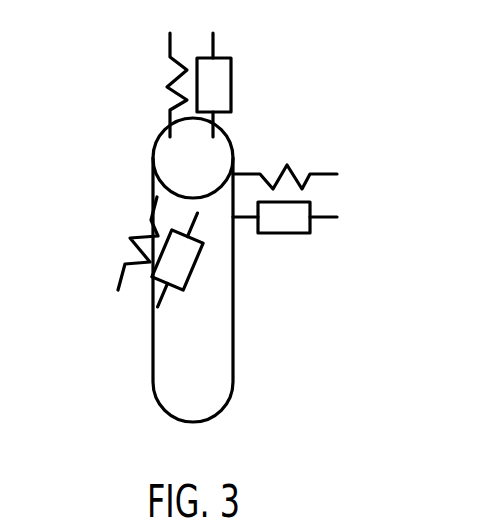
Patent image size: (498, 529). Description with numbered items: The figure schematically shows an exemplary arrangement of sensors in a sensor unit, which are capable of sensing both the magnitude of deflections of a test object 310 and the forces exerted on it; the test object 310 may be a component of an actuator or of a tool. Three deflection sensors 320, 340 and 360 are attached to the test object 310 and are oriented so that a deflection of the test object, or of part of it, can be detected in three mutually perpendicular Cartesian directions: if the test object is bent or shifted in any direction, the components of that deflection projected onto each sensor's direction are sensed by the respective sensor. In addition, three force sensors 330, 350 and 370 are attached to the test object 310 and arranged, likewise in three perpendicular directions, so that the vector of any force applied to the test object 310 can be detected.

The test object 310 is at (233, 370).
The deflection sensor 320 is at (298, 172).
The force sensor 330 is at (291, 234).
The deflection sensor 340 is at (168, 92).
The force sensor 350 is at (232, 73).
The deflection sensor 360 is at (142, 233).
The force sensor 370 is at (153, 277).